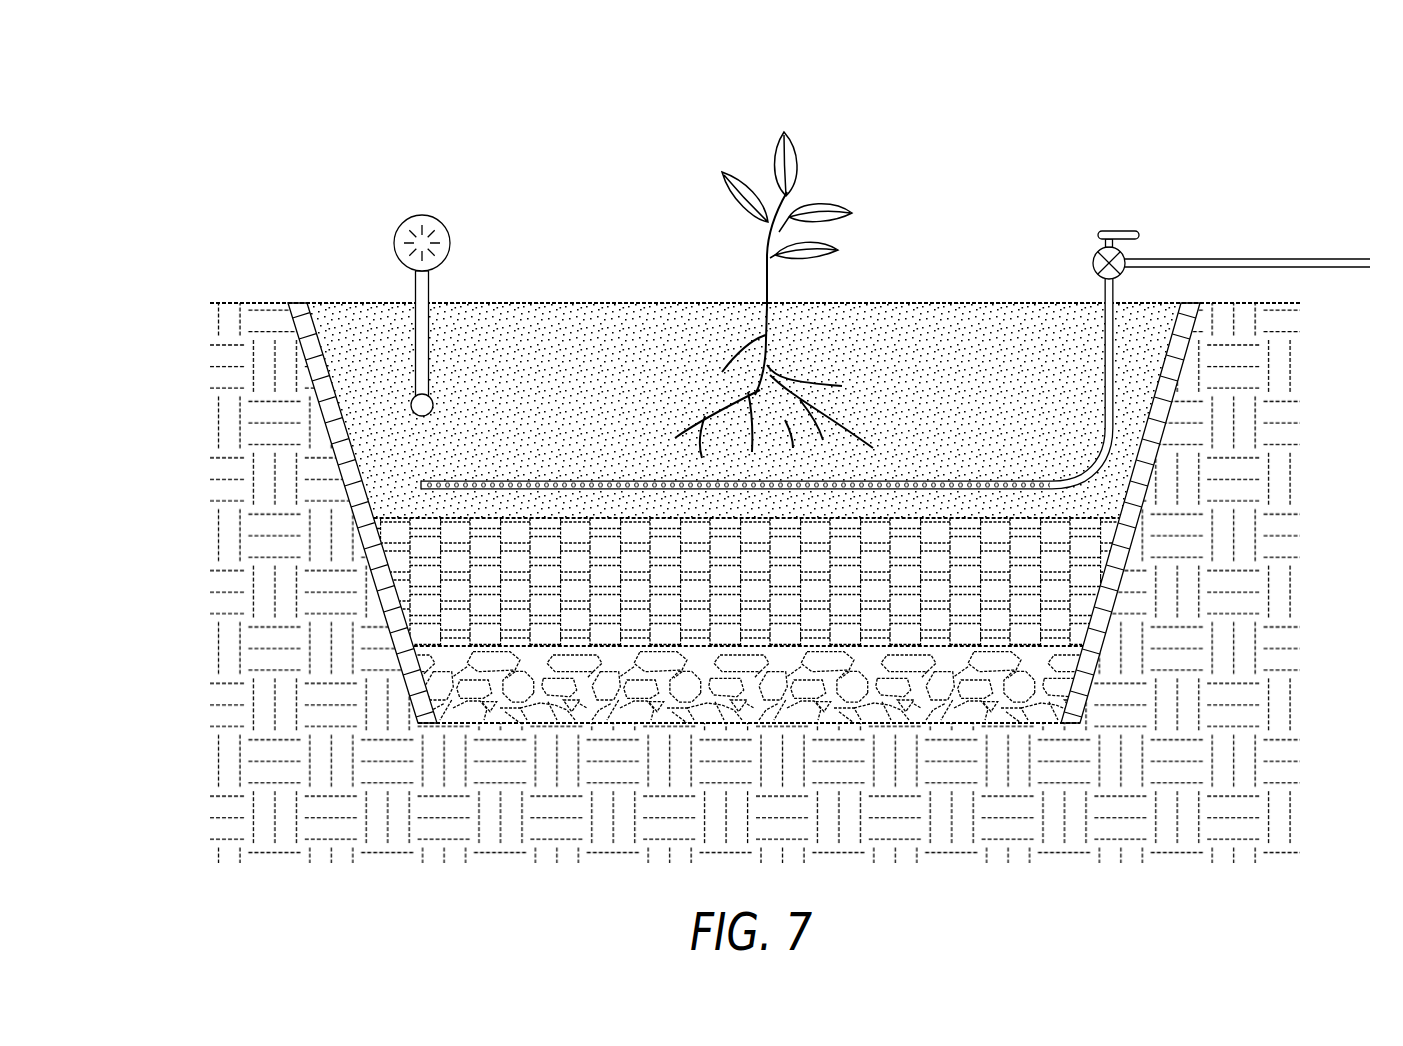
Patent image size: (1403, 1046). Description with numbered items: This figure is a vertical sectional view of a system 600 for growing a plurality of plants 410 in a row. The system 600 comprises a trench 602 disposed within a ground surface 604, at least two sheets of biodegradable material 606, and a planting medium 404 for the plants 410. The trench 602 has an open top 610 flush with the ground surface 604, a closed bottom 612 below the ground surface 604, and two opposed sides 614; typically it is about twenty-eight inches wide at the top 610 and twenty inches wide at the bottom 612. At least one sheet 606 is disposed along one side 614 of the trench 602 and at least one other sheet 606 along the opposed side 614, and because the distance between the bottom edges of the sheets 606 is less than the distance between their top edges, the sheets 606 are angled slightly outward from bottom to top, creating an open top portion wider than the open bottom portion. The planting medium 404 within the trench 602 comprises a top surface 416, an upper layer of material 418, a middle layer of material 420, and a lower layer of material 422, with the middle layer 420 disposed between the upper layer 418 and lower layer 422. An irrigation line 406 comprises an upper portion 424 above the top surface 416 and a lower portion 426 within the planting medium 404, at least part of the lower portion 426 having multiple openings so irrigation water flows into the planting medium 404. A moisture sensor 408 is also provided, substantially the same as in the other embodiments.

The system 600 is at (875, 108).
The planting medium 404 is at (960, 280).
The irrigation line 406 is at (1140, 212).
The moisture sensor 408 is at (421, 214).
The plant 410 is at (762, 253).
The top surface 416 is at (585, 302).
The upper layer of material 418 is at (1143, 363).
The middle layer of material 420 is at (452, 580).
The lower layer of material 422 is at (603, 690).
The upper portion 424 is at (1104, 292).
The lower portion 426 is at (1088, 479).
The trench 602 is at (1232, 414).
The ground surface 604 is at (1257, 295).
The sheet of biodegradable material 606 is at (343, 462).
The open top 610 is at (282, 342).
The closed bottom 612 is at (457, 745).
The opposed sides 614 is at (377, 658).